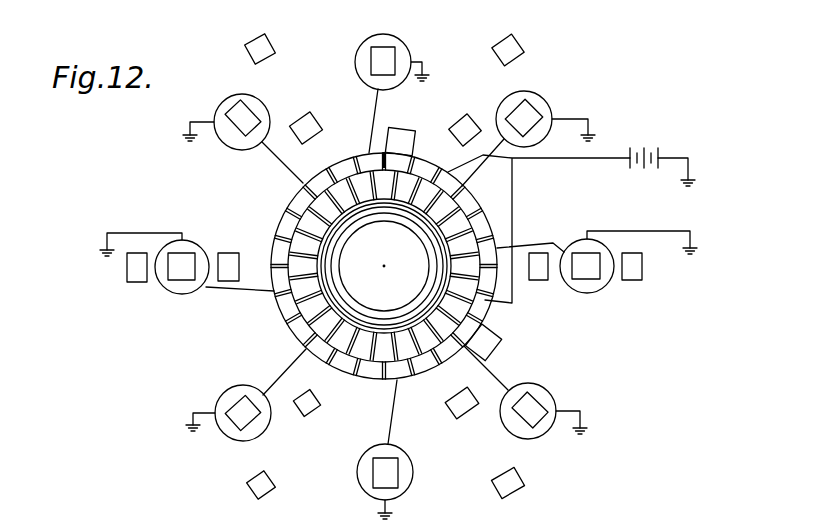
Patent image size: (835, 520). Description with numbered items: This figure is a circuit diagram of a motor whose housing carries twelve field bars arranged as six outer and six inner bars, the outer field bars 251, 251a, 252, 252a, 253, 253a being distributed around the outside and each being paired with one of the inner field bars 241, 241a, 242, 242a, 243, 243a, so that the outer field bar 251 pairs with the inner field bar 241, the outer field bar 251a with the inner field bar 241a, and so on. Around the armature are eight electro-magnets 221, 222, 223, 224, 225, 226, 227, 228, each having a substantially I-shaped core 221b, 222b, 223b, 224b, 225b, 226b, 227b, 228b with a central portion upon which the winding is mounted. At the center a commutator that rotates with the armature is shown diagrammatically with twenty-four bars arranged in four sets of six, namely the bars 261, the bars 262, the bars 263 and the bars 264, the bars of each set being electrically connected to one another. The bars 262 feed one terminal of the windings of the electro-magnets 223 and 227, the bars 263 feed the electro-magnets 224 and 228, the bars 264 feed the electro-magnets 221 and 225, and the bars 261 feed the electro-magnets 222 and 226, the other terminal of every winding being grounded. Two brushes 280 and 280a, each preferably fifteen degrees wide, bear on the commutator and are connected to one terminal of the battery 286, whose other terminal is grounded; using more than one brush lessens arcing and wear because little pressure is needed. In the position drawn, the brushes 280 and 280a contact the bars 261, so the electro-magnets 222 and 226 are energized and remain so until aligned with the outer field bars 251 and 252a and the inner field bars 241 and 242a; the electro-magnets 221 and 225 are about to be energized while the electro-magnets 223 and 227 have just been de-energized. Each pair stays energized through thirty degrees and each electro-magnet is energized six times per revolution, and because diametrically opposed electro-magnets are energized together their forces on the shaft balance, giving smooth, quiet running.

The electro-magnet 221 is at (375, 33).
The core 221b is at (384, 58).
The electro-magnet 222 is at (232, 92).
The core 222b is at (232, 115).
The electro-magnet 223 is at (178, 288).
The core 223b is at (170, 275).
The electro-magnet 224 is at (217, 400).
The core 224b is at (237, 395).
The electro-magnet 225 is at (413, 480).
The core 225b is at (380, 477).
The electro-magnet 226 is at (555, 400).
The core 226b is at (533, 418).
The electro-magnet 227 is at (573, 242).
The core 227b is at (585, 255).
The electro-magnet 228 is at (532, 93).
The core 228b is at (535, 115).
The inner field bar 241 is at (310, 115).
The inner field bar 241a is at (223, 253).
The inner field bar 242 is at (318, 410).
The inner field bar 242a is at (458, 410).
The inner field bar 243 is at (540, 273).
The inner field bar 243a is at (472, 117).
The outer field bar 251 is at (260, 44).
The outer field bar 251a is at (133, 273).
The outer field bar 252 is at (265, 478).
The outer field bar 252a is at (512, 477).
The outer field bar 253 is at (633, 268).
The outer field bar 253a is at (517, 43).
The commutator bars 261 is at (385, 150).
The commutator bars 262 is at (417, 160).
The commutator bars 263 is at (350, 155).
The commutator bars 264 is at (363, 153).
The brush 280 is at (405, 132).
The brush 280a is at (497, 340).
The battery 286 is at (650, 150).